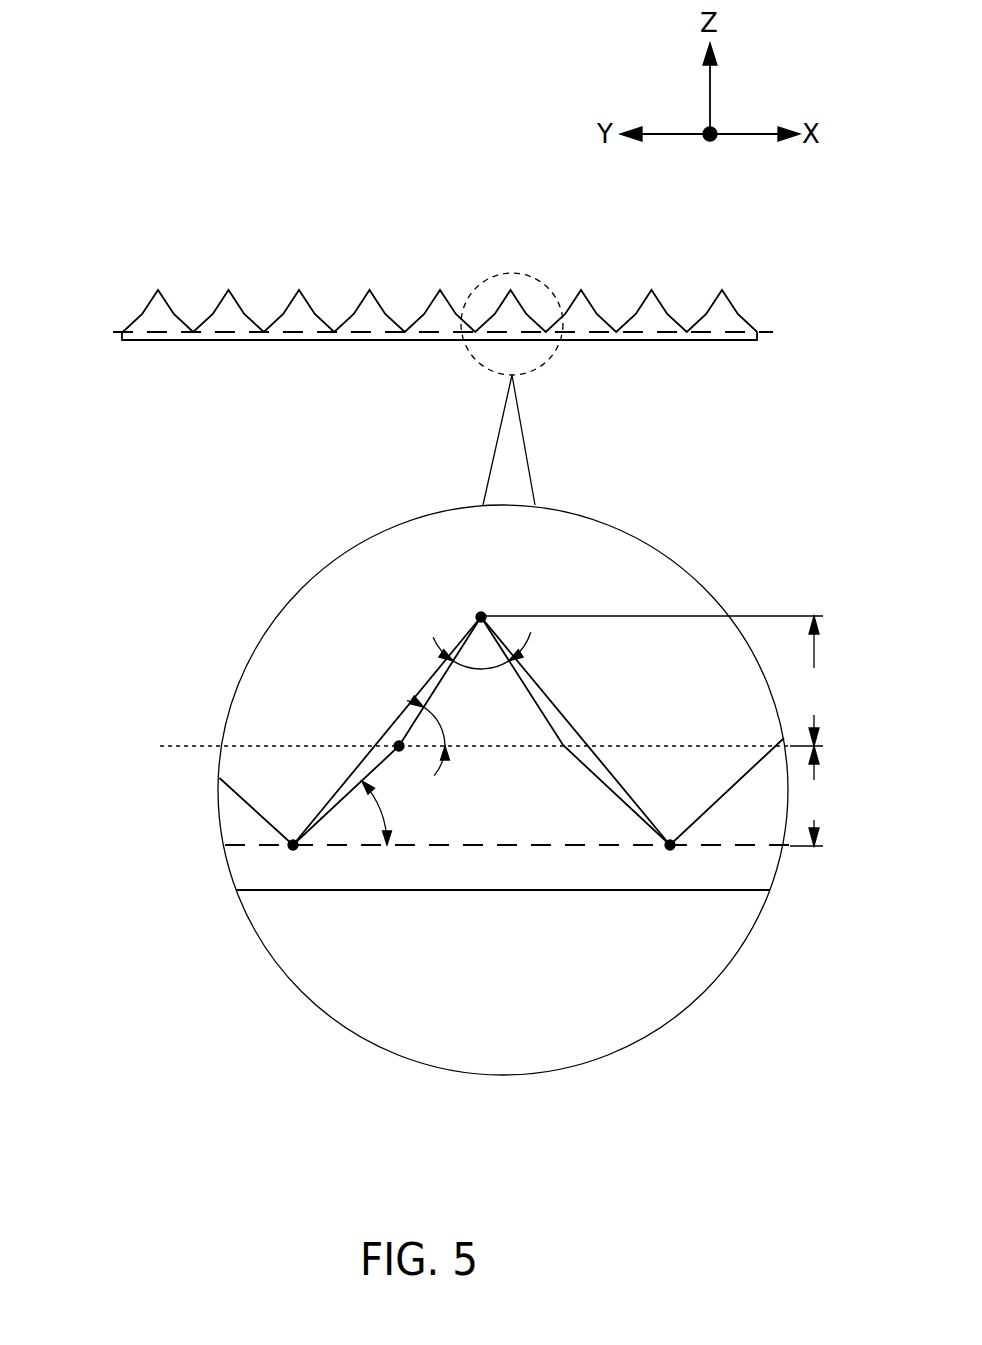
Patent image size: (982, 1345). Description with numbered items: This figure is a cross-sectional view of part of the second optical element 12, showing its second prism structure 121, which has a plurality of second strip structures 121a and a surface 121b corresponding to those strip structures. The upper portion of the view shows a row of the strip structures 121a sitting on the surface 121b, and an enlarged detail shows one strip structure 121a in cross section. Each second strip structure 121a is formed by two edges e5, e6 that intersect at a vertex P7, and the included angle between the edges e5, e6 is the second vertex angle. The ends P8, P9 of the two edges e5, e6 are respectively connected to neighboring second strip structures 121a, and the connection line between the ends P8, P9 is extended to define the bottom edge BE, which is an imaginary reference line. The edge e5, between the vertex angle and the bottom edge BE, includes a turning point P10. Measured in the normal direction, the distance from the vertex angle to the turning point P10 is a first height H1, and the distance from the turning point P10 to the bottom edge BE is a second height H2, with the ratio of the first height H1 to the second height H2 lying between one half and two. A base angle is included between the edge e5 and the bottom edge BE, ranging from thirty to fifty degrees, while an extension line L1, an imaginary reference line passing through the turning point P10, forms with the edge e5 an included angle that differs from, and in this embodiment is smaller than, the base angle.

The second optical element 12 is at (311, 152).
The second prism structure 121 is at (411, 544).
The second strip structure 121a is at (160, 322).
The surface 121b is at (222, 342).
The bottom edge BE is at (767, 330).
The extension line L1 is at (171, 746).
The vertex P7 is at (483, 600).
The end P8 is at (295, 861).
The end P9 is at (673, 862).
The turning point P10 is at (375, 731).
The edge e5 is at (315, 823).
The edge e6 is at (550, 720).
The first height H1 is at (657, 681).
The second height H2 is at (815, 796).